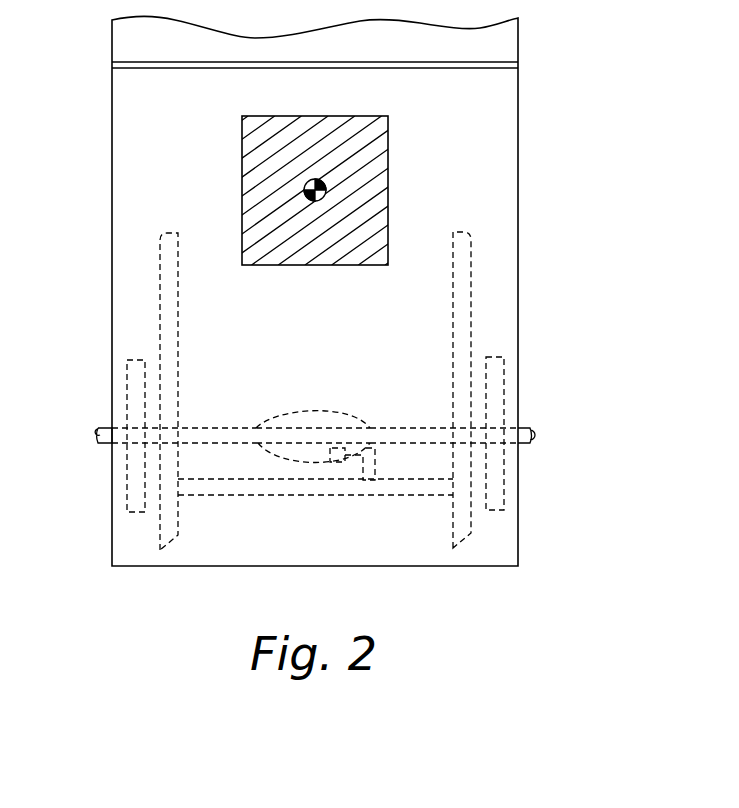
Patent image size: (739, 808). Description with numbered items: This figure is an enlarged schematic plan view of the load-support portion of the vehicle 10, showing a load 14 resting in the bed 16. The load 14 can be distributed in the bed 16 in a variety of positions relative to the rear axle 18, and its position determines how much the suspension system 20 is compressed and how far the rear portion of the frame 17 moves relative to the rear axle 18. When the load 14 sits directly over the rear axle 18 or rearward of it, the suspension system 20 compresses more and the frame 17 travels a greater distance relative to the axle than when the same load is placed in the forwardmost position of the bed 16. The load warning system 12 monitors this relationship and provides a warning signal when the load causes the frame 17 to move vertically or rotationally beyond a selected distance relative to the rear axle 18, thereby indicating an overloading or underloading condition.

The vehicle 10 is at (525, 111).
The load warning system 12 is at (278, 460).
The load 14 is at (292, 242).
The bed 16 is at (135, 150).
The frame 17 is at (462, 297).
The rear axle 18 is at (523, 446).
The suspension system 20 is at (497, 378).